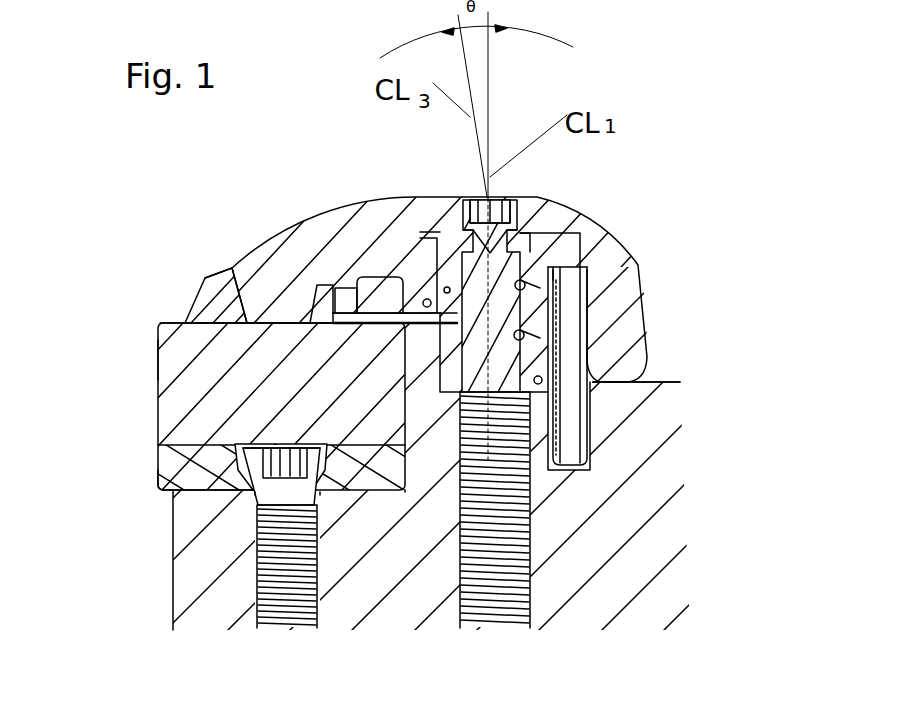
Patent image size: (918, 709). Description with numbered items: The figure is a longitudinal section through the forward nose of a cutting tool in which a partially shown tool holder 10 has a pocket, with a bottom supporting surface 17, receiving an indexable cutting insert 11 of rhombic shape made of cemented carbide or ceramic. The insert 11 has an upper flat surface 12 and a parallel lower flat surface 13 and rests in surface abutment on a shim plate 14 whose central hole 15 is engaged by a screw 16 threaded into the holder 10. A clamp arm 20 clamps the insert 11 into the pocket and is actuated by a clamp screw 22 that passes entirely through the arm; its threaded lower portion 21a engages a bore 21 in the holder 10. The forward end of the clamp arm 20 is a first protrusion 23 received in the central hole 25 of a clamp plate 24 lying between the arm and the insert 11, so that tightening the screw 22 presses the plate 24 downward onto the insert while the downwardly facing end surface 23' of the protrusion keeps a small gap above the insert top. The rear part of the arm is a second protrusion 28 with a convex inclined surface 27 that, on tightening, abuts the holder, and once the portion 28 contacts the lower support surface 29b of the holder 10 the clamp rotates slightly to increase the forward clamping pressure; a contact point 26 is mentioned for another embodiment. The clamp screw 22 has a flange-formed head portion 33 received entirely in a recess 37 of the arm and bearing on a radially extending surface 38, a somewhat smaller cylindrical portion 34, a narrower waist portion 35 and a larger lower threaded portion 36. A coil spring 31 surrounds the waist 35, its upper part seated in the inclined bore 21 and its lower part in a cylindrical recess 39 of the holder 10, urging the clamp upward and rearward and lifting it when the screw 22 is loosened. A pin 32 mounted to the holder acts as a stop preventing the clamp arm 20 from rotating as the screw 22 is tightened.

The tool holder 10 is at (673, 488).
The indexable cutting insert 11 is at (158, 365).
The upper flat surface 12 is at (158, 322).
The lower flat surface 13 is at (170, 445).
The shim plate 14 is at (178, 468).
The central hole 15 is at (230, 490).
The screw 16 is at (253, 503).
The bottom supporting surface 17 is at (349, 492).
The clamp arm 20 is at (315, 222).
The bore 21 is at (540, 252).
The threaded lower portion 21a is at (527, 443).
The clamp screw 22 is at (517, 220).
The first protrusion 23 is at (230, 230).
The downwardly facing end surface 23' is at (112, 385).
The clamp plate 24 is at (203, 277).
The central hole 25 is at (215, 305).
The contact point 26 is at (318, 328).
The inclined surface 27 is at (590, 360).
The second protrusion 28 is at (643, 290).
The lower support surface 29b is at (667, 380).
The spring 31 is at (555, 267).
The pin 32 is at (573, 438).
The head portion 33 is at (520, 222).
The cylindrical portion 34 is at (530, 242).
The waist portion 35 is at (455, 305).
The threaded portion 36 is at (425, 490).
The recess 37 is at (430, 225).
The radially extending surface 38 is at (438, 290).
The cylindrical recess 39 is at (430, 348).